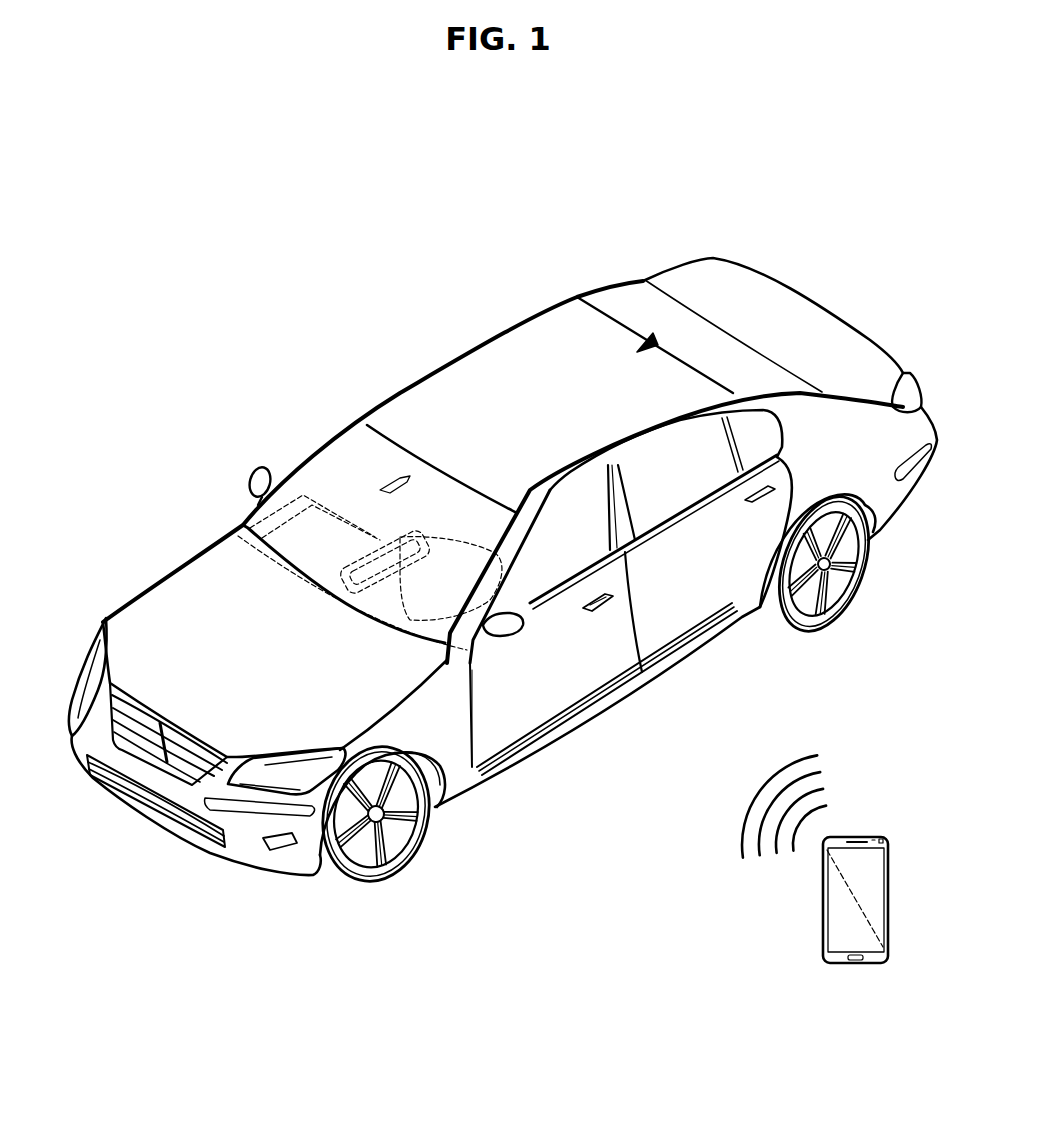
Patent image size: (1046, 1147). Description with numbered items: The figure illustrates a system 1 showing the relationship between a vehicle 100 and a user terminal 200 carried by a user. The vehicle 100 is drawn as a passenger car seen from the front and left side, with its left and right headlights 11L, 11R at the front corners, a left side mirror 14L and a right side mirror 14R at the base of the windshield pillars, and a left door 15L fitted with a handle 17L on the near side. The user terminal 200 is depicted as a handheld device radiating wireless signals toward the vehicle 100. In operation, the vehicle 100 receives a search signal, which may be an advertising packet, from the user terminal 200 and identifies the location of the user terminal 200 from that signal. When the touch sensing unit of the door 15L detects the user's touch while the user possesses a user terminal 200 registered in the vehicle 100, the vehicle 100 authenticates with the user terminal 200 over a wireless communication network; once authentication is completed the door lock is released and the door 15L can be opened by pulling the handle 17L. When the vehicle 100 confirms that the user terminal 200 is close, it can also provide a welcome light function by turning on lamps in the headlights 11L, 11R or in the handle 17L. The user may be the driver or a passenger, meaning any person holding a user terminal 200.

The vehicle control system 1 is at (338, 229).
The vehicle 100 is at (537, 312).
The headlight 11L is at (305, 773).
The headlight 11R is at (92, 655).
The left side mirror 14L is at (517, 630).
The right side mirror 14R is at (250, 480).
The door 15L is at (582, 663).
The handle 17L is at (607, 596).
The user terminal 200 is at (874, 838).